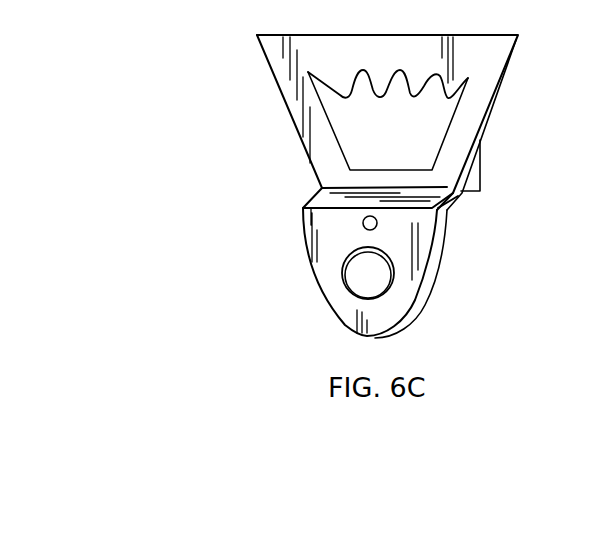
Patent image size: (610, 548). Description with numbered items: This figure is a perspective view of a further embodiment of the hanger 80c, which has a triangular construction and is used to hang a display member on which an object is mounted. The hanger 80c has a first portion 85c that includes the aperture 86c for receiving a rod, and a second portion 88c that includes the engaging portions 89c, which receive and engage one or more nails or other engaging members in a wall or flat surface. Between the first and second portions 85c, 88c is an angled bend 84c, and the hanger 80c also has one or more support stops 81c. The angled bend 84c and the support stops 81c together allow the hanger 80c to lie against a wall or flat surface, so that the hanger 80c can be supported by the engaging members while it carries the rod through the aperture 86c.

The hanger 80c is at (279, 15).
The support stop 81c is at (472, 177).
The angled bend 84c is at (453, 197).
The first portion 85c is at (398, 290).
The aperture 86c is at (363, 274).
The second portion 88c is at (487, 70).
The engaging portions 89c is at (363, 70).